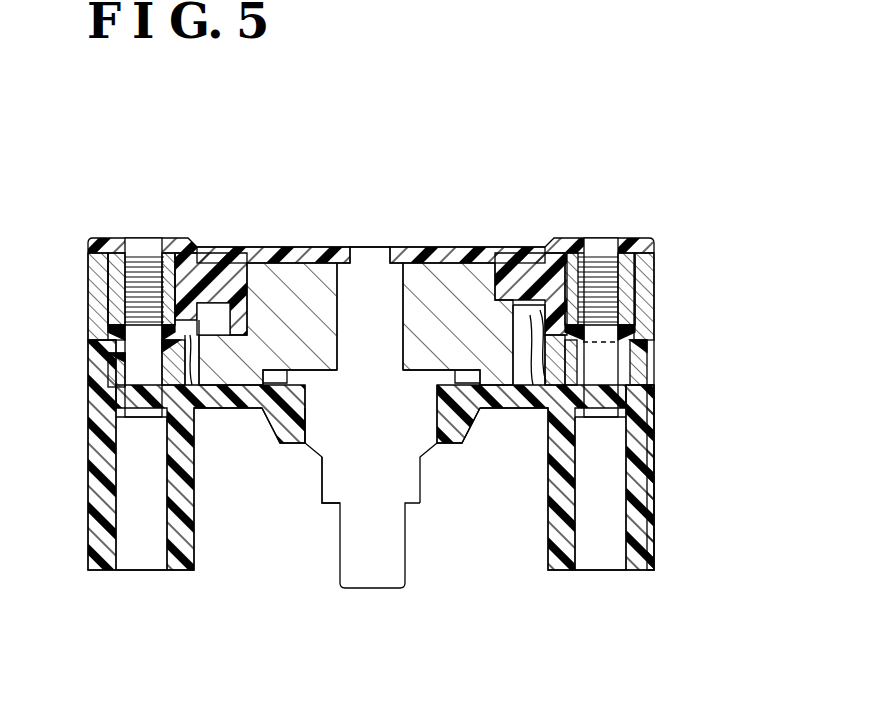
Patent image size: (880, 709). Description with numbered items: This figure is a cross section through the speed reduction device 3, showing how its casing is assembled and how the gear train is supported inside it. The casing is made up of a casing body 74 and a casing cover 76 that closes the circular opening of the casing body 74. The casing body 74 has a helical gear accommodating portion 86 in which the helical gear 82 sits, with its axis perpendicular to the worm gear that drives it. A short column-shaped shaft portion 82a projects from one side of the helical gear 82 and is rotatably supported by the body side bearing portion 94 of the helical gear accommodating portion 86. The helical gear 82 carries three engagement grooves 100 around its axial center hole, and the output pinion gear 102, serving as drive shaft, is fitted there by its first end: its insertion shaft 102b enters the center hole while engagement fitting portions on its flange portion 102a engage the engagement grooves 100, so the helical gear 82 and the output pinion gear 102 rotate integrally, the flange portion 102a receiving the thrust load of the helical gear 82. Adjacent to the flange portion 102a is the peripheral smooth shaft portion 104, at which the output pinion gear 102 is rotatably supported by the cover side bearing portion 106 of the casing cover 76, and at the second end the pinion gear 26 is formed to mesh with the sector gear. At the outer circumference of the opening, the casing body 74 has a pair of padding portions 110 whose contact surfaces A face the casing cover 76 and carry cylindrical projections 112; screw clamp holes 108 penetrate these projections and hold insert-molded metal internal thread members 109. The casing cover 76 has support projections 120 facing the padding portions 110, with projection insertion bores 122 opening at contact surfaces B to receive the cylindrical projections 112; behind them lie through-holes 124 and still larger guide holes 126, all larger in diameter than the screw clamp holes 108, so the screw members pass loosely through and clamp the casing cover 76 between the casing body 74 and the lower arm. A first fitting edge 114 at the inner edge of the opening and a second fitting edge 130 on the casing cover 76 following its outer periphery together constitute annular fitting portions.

The speed reduction device 3 is at (128, 150).
The pinion gear 26 is at (325, 485).
The casing body 74 is at (616, 220).
The casing cover 76 is at (204, 550).
The helical gear 82 is at (280, 288).
The shaft portion 82a is at (233, 300).
The helical gear accommodating portion 86 is at (547, 347).
The body side bearing portion 94 is at (467, 300).
The engagement grooves 100 is at (482, 412).
The output pinion gear 102 is at (373, 580).
The flange portion 102a is at (443, 373).
The insertion shaft 102b is at (353, 297).
The peripheral smooth shaft portion 104 is at (458, 447).
The cover side bearing portion 106 is at (290, 437).
The screw clamp holes 108 is at (140, 238).
The internal thread members 109 is at (88, 258).
The padding portions 110 is at (88, 287).
The cylindrical projections 112 is at (158, 398).
The first fitting edge 114 is at (116, 378).
The support projections 120 is at (88, 522).
The projection insertion bores 122 is at (645, 352).
The through-holes 124 is at (158, 400).
The guide holes 126 is at (167, 530).
The second fitting edge 130 is at (112, 331).
The contact surfaces A is at (655, 342).
The contact surfaces B is at (110, 335).